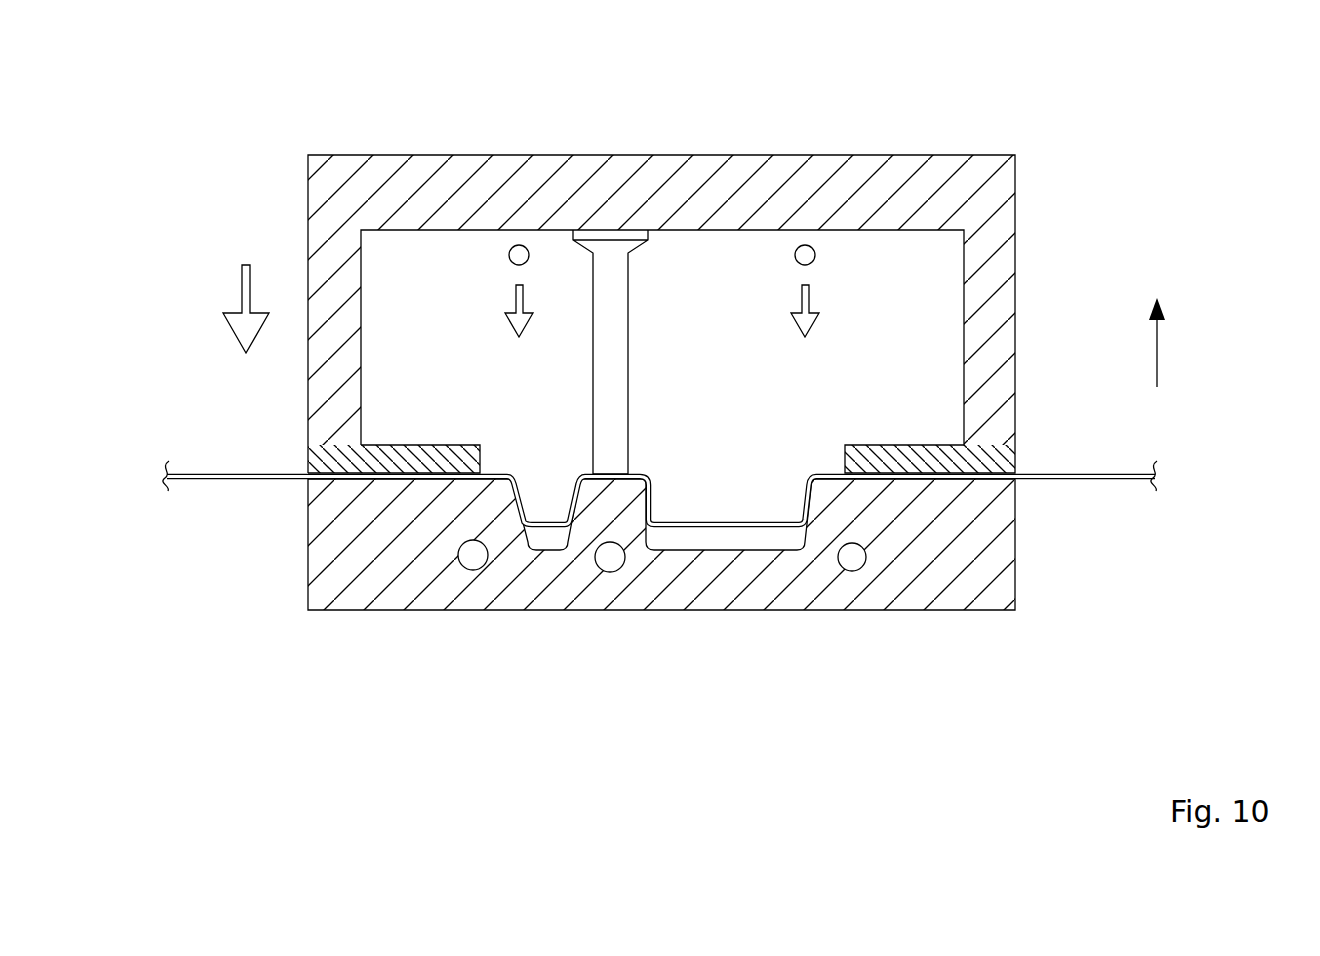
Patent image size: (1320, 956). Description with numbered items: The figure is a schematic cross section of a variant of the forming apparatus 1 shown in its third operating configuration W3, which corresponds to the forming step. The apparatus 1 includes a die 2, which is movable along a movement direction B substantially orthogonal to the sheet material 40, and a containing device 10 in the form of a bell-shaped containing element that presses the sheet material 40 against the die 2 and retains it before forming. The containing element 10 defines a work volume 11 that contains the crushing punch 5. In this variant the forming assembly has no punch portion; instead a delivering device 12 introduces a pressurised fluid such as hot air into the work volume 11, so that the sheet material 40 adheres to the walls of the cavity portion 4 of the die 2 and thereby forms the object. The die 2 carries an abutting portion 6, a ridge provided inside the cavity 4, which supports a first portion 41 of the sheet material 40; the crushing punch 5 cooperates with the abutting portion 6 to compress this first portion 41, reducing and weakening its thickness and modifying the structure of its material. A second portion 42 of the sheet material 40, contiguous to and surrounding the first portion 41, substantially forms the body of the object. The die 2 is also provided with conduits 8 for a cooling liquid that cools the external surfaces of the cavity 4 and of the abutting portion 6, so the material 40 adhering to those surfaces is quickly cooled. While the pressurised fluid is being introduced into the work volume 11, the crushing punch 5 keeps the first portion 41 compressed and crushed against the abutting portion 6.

The forming apparatus 1 is at (576, 372).
The containing device 10 is at (590, 274).
The die 2 is at (601, 593).
The crushing punch 5 is at (620, 366).
The delivering device 12 is at (519, 254).
The work volume 11 is at (913, 323).
The sheet material 40 is at (660, 584).
The cavity portion 4 is at (540, 543).
The abutting portion 6 is at (579, 534).
The conduits 8 is at (471, 556).
The first portion 41 is at (610, 480).
The second portion 42 is at (772, 527).
The third operating configuration W3 is at (1131, 185).
The movement direction B is at (1168, 342).